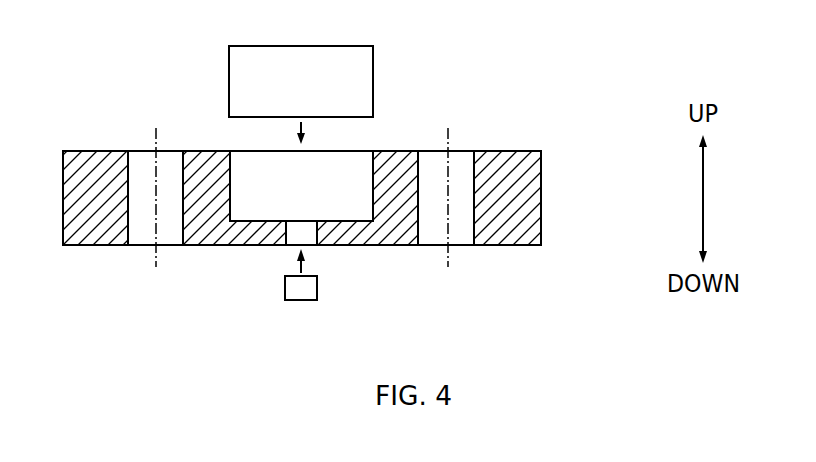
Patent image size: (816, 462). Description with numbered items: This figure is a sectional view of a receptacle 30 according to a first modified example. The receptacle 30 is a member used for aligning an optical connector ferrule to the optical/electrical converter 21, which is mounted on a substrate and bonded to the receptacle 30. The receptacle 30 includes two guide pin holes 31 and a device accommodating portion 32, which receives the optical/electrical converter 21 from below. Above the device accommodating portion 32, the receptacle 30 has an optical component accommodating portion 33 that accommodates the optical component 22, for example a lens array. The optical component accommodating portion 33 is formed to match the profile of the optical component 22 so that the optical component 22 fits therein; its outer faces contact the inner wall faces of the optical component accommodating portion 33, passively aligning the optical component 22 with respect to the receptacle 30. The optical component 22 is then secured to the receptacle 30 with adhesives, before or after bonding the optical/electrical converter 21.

The optical/electrical converter 21 is at (290, 290).
The optical component 22 is at (364, 81).
The receptacle 30 is at (530, 197).
The guide pin holes 31 is at (134, 163).
The device accommodating portion 32 is at (312, 238).
The optical component accommodating portion 33 is at (235, 163).